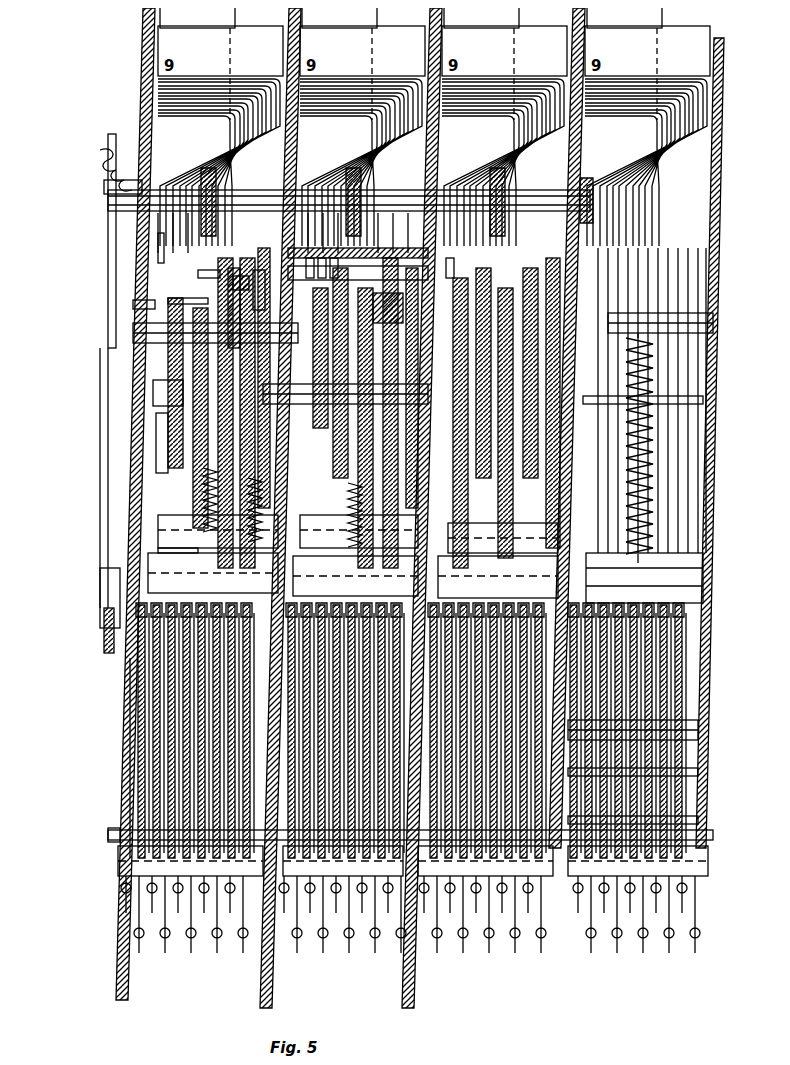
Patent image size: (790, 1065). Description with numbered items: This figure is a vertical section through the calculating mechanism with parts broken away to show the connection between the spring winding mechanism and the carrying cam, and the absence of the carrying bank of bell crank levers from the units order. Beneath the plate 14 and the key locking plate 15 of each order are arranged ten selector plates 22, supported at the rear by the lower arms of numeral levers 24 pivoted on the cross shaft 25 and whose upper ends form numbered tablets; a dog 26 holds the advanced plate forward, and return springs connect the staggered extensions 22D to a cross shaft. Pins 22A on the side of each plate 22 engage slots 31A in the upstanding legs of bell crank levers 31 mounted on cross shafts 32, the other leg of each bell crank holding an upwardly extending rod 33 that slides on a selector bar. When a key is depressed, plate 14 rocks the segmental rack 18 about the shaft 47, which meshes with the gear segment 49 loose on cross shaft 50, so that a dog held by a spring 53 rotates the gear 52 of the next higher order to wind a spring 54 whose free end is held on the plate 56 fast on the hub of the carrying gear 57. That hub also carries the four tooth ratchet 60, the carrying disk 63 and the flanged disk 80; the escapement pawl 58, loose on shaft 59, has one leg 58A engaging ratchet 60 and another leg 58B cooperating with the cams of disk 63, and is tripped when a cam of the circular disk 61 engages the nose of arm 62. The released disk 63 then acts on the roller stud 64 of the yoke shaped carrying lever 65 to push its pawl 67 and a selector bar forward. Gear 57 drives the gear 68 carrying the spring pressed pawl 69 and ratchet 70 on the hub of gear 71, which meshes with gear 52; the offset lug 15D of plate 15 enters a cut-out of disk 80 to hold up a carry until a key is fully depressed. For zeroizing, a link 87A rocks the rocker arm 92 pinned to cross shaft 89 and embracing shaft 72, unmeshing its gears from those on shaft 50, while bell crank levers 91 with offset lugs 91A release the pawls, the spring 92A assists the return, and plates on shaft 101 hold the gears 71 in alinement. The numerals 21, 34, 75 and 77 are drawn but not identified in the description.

The numeral lever 24 is at (150, 62).
The cross shaft 89 is at (120, 166).
The spring 92A is at (96, 180).
The rocker arm 92 is at (100, 235).
The shaft 101 is at (130, 298).
The shaft 72 is at (125, 327).
The offset lug 15D is at (145, 378).
The four-tooth ratchet 60 is at (160, 372).
The cross shaft 50 is at (185, 395).
The roller stud 64 is at (148, 415).
The plate 56 is at (210, 430).
The carrying disk 63 is at (232, 450).
The disk 80 is at (200, 470).
The carrying lever 65 is at (250, 490).
The shaft 47 is at (150, 540).
The pawl 67 is at (92, 555).
The link 87A is at (106, 618).
The pin 22A is at (122, 648).
The slot 31A is at (150, 730).
The rod 33 is at (150, 760).
The selector plate 22 is at (150, 790).
The cross shaft 32 is at (100, 826).
The bell crank lever 31 is at (140, 858).
The extension 22D is at (165, 908).
The bar 21 is at (410, 988).
The dog 26 is at (690, 796).
The bar 34 is at (695, 722).
The cross shaft 25 is at (700, 400).
The segmental rack 18 is at (710, 595).
The key locking plate 15 is at (178, 561).
The gear segment 49 is at (288, 531).
The plate 14 is at (425, 560).
The slide 75 is at (440, 407).
The spring 54 is at (285, 428).
The circular disk 61 is at (290, 505).
The carrying gear 57 is at (360, 373).
The gear 52 is at (239, 510).
The rocking bell crank lever 91 is at (283, 238).
The offset lug 91A is at (200, 266).
The spring pressed pawl 69 is at (371, 398).
The gear 68 is at (368, 357).
The ratchet 70 is at (234, 273).
The gear 71 is at (188, 297).
The escapement pawl 58 is at (302, 258).
The shaft 59 is at (317, 261).
The escapement leg 58A is at (341, 261).
The arm 62 is at (406, 374).
The block 77 is at (389, 308).
The spring 53 is at (451, 257).
The escapement leg 58B is at (513, 394).